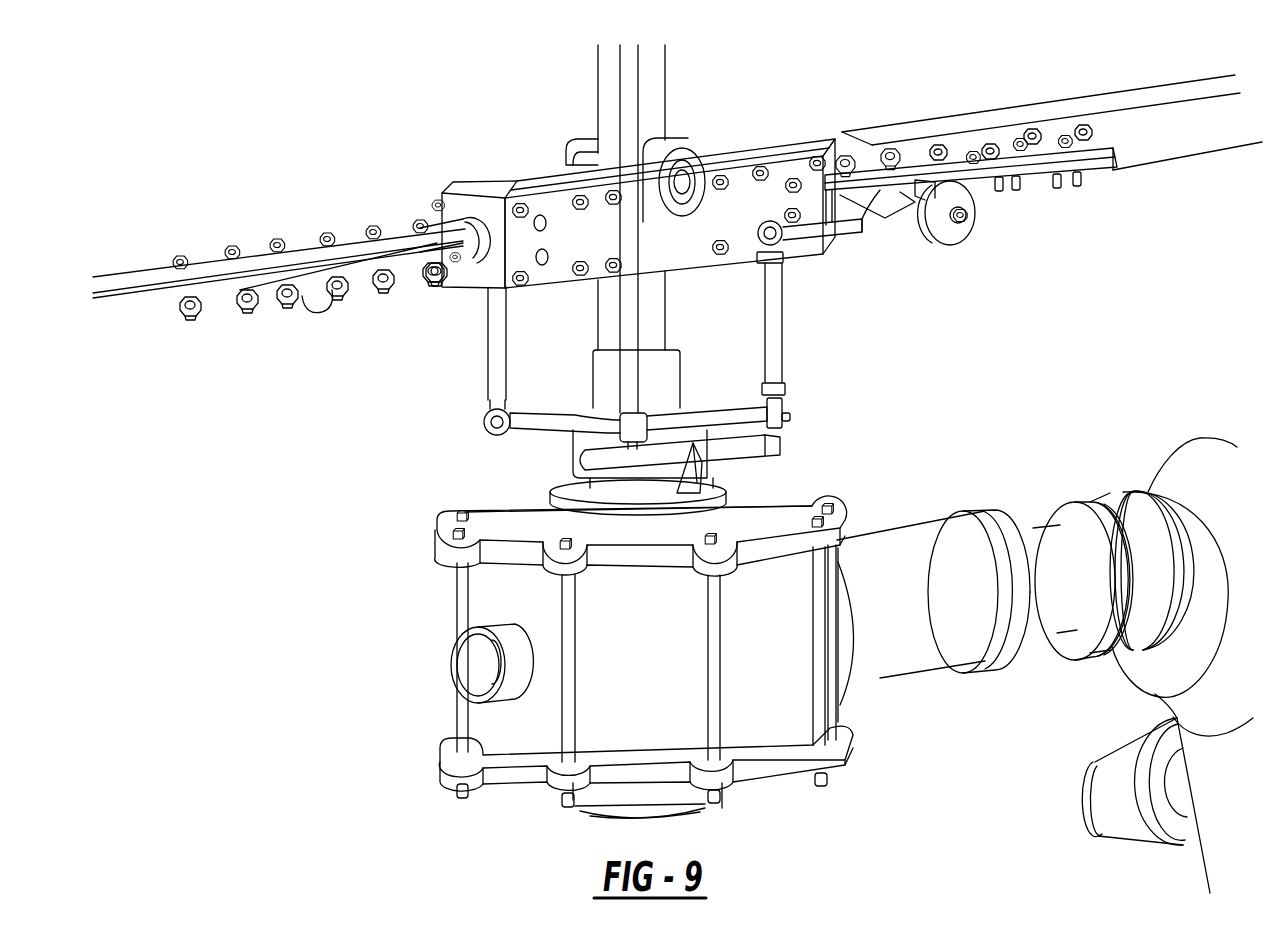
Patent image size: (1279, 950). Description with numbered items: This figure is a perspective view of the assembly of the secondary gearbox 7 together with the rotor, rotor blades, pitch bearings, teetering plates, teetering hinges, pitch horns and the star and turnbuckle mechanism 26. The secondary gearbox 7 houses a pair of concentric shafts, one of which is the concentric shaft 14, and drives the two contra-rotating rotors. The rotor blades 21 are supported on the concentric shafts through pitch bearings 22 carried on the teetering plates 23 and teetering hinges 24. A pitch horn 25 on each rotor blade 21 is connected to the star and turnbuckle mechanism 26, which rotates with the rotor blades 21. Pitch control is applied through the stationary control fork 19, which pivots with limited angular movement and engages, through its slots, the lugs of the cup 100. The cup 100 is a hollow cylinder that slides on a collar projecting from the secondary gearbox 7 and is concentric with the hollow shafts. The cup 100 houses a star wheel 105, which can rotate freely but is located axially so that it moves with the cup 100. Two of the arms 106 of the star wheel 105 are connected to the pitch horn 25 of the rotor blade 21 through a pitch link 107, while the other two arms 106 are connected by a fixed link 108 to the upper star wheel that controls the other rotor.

The secondary gearbox 7 is at (408, 667).
The concentric shaft 14 is at (605, 302).
The stationary control fork 19 is at (753, 468).
The rotor blade 21 is at (132, 298).
The pitch bearing 22 is at (478, 222).
The teetering plate 23 is at (783, 178).
The teetering hinge 24 is at (680, 178).
The pitch horn 25 is at (822, 230).
The star and turnbuckle mechanism 26 is at (717, 445).
The cup 100 is at (573, 452).
The star wheel 105 is at (570, 417).
The arm of the star wheel 106 is at (528, 410).
The pitch link 107 is at (490, 357).
The fixed link 108 is at (633, 327).